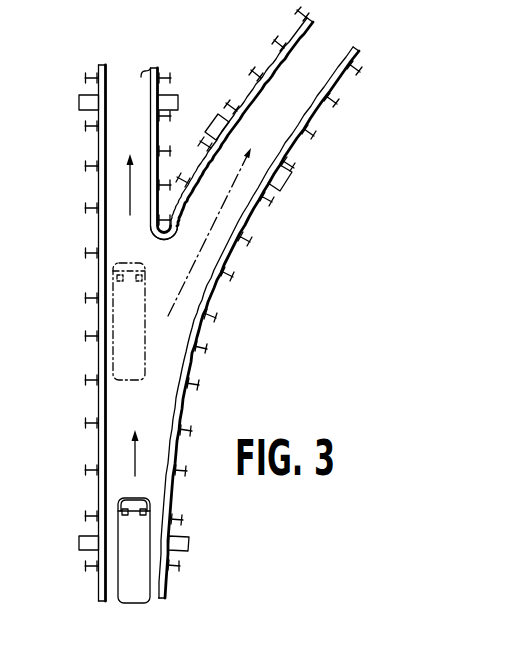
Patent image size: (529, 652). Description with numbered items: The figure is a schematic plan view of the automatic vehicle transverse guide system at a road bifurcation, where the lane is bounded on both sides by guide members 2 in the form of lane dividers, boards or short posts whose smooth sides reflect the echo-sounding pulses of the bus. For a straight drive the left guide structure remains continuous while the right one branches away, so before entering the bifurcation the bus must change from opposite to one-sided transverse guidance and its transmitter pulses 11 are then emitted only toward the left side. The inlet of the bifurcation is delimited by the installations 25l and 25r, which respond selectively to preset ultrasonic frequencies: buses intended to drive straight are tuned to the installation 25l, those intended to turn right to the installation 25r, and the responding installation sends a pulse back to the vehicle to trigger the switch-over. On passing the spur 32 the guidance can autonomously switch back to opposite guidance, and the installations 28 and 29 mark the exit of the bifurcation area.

The guide members 2 is at (98, 362).
The transmitter pulses 11 is at (113, 282).
The installation 28 is at (80, 105).
The installation 29 is at (208, 128).
The spur 32 is at (165, 246).
The installation 25l is at (86, 553).
The installation 25r is at (180, 553).